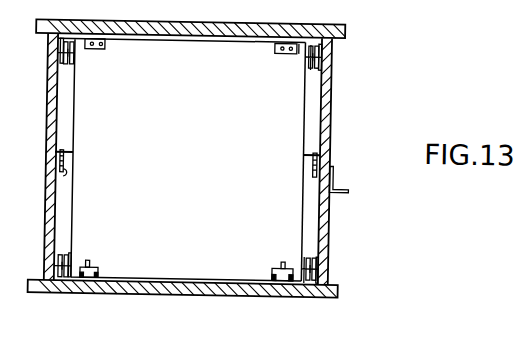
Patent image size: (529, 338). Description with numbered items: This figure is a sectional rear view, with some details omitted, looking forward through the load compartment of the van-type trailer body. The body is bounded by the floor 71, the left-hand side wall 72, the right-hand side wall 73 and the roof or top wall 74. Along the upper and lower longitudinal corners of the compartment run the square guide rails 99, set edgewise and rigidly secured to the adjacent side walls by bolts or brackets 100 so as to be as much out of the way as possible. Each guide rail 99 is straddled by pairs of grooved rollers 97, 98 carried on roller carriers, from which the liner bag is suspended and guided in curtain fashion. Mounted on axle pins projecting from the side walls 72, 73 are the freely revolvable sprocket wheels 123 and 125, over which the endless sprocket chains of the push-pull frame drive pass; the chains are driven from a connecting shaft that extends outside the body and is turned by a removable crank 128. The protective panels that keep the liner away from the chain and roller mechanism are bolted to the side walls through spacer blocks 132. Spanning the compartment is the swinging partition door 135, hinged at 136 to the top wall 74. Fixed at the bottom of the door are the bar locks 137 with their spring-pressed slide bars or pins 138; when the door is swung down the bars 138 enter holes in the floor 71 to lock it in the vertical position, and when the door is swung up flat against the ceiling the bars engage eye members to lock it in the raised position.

The floor 71 is at (340, 288).
The left-hand side wall 72 is at (51, 110).
The right-hand side wall 73 is at (332, 130).
The roof or top wall 74 is at (220, 22).
The grooved roller 97 is at (320, 43).
The grooved roller 98 is at (318, 61).
The guide rail 99 is at (73, 52).
The bolts or brackets 100 is at (48, 68).
The sprocket wheel 123 is at (57, 182).
The sprocket wheel 125 is at (328, 155).
The removable crank 128 is at (348, 189).
The blocks 132 is at (345, 162).
The door 135 is at (89, 198).
The hinges 136 is at (91, 40).
The bar locks 137 is at (100, 268).
The slide bars or pins 138 is at (90, 262).